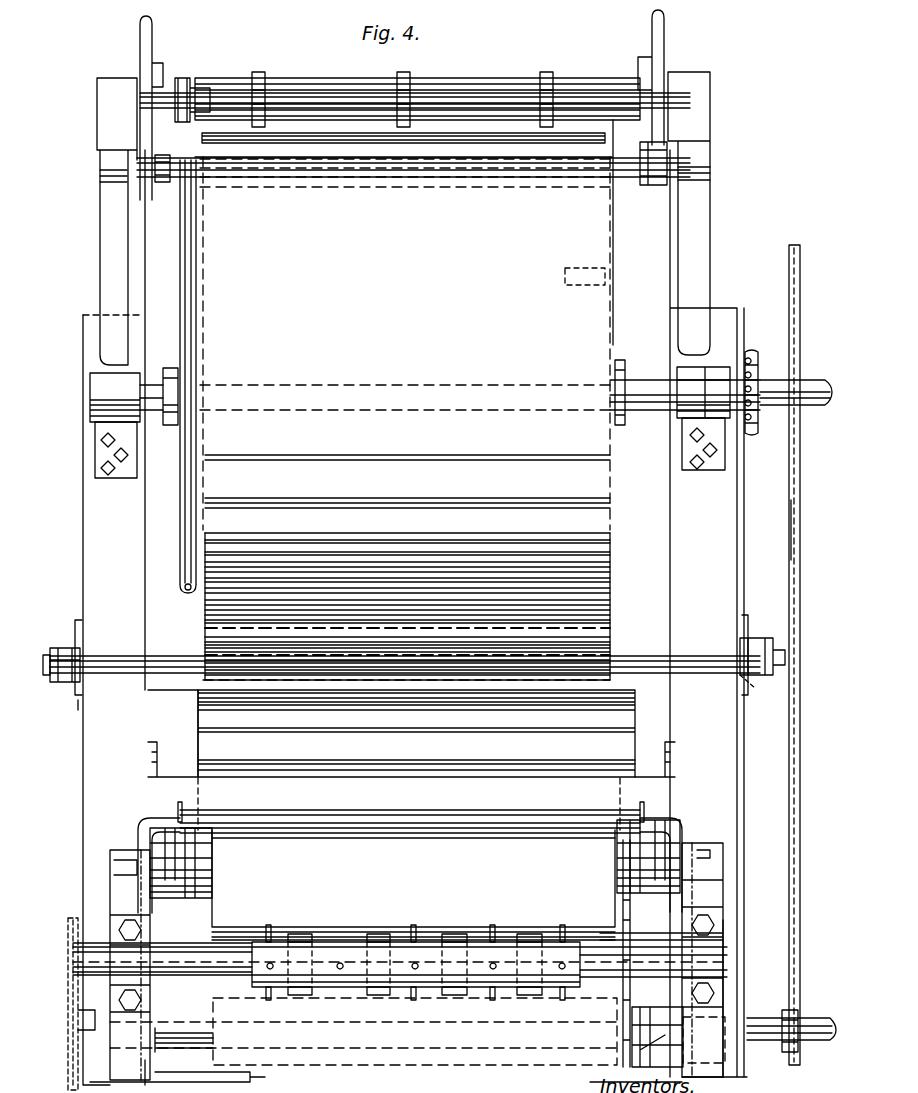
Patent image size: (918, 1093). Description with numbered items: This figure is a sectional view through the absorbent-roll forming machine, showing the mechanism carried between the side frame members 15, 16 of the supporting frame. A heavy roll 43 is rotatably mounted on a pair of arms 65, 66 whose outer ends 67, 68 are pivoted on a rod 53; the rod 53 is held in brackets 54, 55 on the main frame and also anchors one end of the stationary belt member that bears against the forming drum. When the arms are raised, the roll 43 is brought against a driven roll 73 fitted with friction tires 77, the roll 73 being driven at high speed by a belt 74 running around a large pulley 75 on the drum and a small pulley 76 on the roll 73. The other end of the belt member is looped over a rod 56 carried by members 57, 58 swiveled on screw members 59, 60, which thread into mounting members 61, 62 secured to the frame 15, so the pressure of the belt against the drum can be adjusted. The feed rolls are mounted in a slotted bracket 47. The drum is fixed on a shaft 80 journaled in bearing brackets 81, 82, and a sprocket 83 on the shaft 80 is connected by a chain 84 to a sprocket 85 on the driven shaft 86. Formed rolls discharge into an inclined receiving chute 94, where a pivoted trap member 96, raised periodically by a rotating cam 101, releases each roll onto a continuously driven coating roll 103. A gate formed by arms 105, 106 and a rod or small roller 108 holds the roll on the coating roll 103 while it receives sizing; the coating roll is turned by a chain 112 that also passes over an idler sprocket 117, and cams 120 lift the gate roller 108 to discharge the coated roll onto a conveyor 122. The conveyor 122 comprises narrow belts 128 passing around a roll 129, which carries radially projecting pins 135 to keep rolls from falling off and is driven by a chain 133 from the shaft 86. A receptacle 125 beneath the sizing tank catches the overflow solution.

The side frame member 15 is at (97, 792).
The side frame member 16 is at (690, 583).
The heavy roll 43 is at (522, 150).
The bracket 47 is at (582, 266).
The rod 53 is at (170, 180).
The bracket 54 is at (100, 240).
The bracket 55 is at (712, 242).
The rod 56 is at (178, 655).
The member 57 is at (62, 648).
The member 58 is at (762, 640).
The screw member 59 is at (65, 682).
The screw member 60 is at (763, 688).
The mounting member 61 is at (78, 712).
The mounting member 62 is at (744, 698).
The arm 65 is at (140, 46).
The arm 66 is at (664, 38).
The outer end 67 is at (162, 155).
The outer end 68 is at (436, 158).
The driven roll 73 is at (305, 80).
The belt 74 is at (182, 258).
The large pulley 75 is at (184, 290).
The small pulley 76 is at (185, 80).
The tires 77 is at (260, 78).
The shaft 80 is at (640, 385).
The bearing bracket 81 is at (95, 384).
The bearing bracket 82 is at (685, 418).
The sprocket 83 is at (800, 338).
The chain 84 is at (789, 535).
The sprocket 85 is at (788, 1010).
The shaft 86 is at (178, 1032).
The receiving chute 94 is at (416, 733).
The trap member 96 is at (490, 777).
The rotating cam 101 is at (138, 832).
The coating roll 103 is at (413, 885).
The arm 105 is at (638, 804).
The arm 106 is at (184, 804).
The gate roller 108 is at (380, 810).
The chain 112 is at (633, 975).
The idler sprocket 117 is at (662, 1037).
The rotating cams 120 is at (200, 848).
The conveyor 122 is at (385, 935).
The receptacle 125 is at (228, 1005).
The narrow belts 128 is at (365, 934).
The roll 129 is at (272, 940).
The chain 133 is at (80, 1018).
The radially projecting pins 135 is at (266, 930).